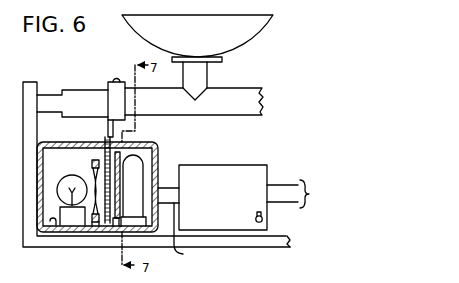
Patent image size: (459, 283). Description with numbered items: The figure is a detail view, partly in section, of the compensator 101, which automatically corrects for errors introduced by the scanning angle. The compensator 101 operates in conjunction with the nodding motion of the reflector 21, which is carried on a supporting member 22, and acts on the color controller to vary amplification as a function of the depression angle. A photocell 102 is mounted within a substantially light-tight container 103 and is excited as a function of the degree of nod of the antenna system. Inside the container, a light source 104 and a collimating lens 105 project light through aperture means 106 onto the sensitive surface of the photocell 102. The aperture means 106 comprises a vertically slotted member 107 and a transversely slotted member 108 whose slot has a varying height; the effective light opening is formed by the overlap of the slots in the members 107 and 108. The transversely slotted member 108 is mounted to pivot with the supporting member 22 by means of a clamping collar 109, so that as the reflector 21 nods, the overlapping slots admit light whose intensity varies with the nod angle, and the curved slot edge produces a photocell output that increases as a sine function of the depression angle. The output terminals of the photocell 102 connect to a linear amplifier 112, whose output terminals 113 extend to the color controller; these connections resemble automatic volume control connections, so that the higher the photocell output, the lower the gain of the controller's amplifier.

The reflector 21 is at (246, 42).
The supporting member 22 is at (228, 97).
The compensator 101 is at (104, 99).
The photocell 102 is at (137, 171).
The light-tight container 103 is at (136, 146).
The light source 104 is at (63, 175).
The collimating lens 105 is at (96, 178).
The aperture means 106 is at (106, 133).
The vertically slotted member 107 is at (116, 229).
The transversely slotted member 108 is at (98, 229).
The clamping collar 109 is at (112, 84).
The linear amplifier 112 is at (232, 169).
The output terminals 113 is at (191, 234).